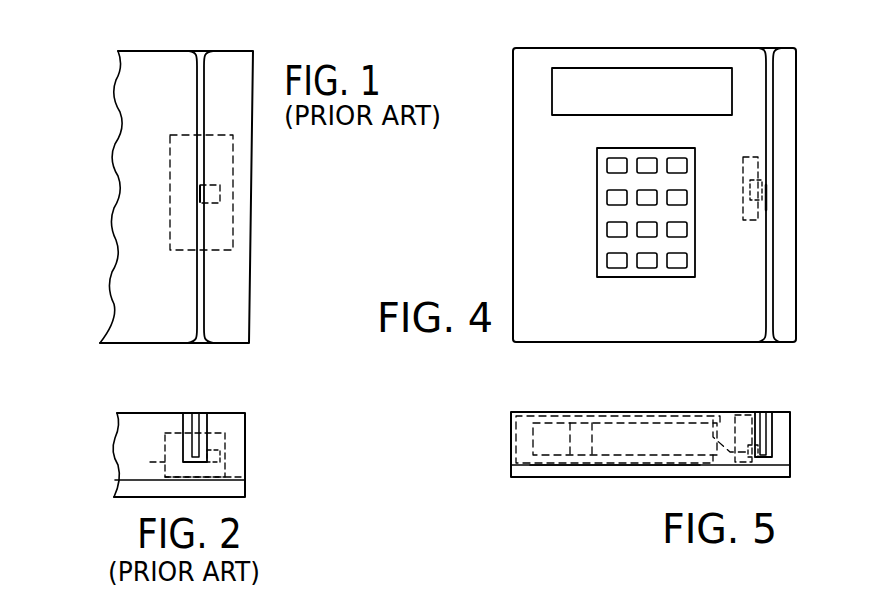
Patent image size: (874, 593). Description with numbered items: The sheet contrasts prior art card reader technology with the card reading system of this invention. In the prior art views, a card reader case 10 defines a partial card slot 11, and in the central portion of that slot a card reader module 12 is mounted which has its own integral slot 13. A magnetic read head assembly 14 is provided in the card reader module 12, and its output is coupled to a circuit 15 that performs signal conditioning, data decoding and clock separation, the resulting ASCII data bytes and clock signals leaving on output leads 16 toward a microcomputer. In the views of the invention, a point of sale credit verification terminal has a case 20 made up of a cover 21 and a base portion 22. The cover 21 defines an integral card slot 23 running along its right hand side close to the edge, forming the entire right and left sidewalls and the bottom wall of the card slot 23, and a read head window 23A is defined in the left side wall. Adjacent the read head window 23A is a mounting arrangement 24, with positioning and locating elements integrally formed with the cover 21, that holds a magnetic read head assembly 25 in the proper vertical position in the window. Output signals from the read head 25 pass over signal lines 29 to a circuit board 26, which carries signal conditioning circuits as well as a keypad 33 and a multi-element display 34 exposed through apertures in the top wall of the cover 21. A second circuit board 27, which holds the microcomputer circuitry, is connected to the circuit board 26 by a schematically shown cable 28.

In FIG. 1, the card reader case 10 is at (258, 292).
In FIG. 2, the card reader case 10 is at (253, 448).
In FIG. 1, the partial card slot 11 is at (196, 333).
In FIG. 2, the partial card slot 11 is at (194, 450).
In FIG. 1, the card reader module 12 is at (238, 237).
In FIG. 2, the card reader module 12 is at (228, 436).
In FIG. 1, the integral slot 13 is at (208, 204).
In FIG. 2, the integral slot 13 is at (190, 433).
In FIG. 1, the magnetic read head assembly 14 is at (209, 194).
In FIG. 2, the magnetic read head assembly 14 is at (203, 455).
In FIG. 2, the circuit 15 is at (228, 476).
In FIG. 2, the output leads 16 is at (155, 463).
In FIG. 4, the case 20 is at (539, 346).
In FIG. 5, the case 20 is at (506, 445).
In FIG. 4, the cover 21 is at (521, 249).
In FIG. 5, the cover 21 is at (522, 433).
In FIG. 5, the base portion 22 is at (518, 470).
In FIG. 4, the card slot 23 is at (770, 272).
In FIG. 5, the card slot 23 is at (762, 413).
In FIG. 4, the read head window 23A is at (768, 196).
In FIG. 4, the mounting arrangement 24 is at (755, 170).
In FIG. 5, the mounting arrangement 24 is at (745, 420).
In FIG. 4, the magnetic read head assembly 25 is at (766, 190).
In FIG. 5, the magnetic read head assembly 25 is at (768, 452).
In FIG. 5, the circuit board 26 is at (612, 421).
In FIG. 5, the second circuit board 27 is at (625, 463).
In FIG. 5, the cable 28 is at (580, 452).
In FIG. 5, the signal lines 29 is at (712, 435).
In FIG. 4, the keypad 33 is at (605, 180).
In FIG. 4, the multi-element display 34 is at (697, 73).